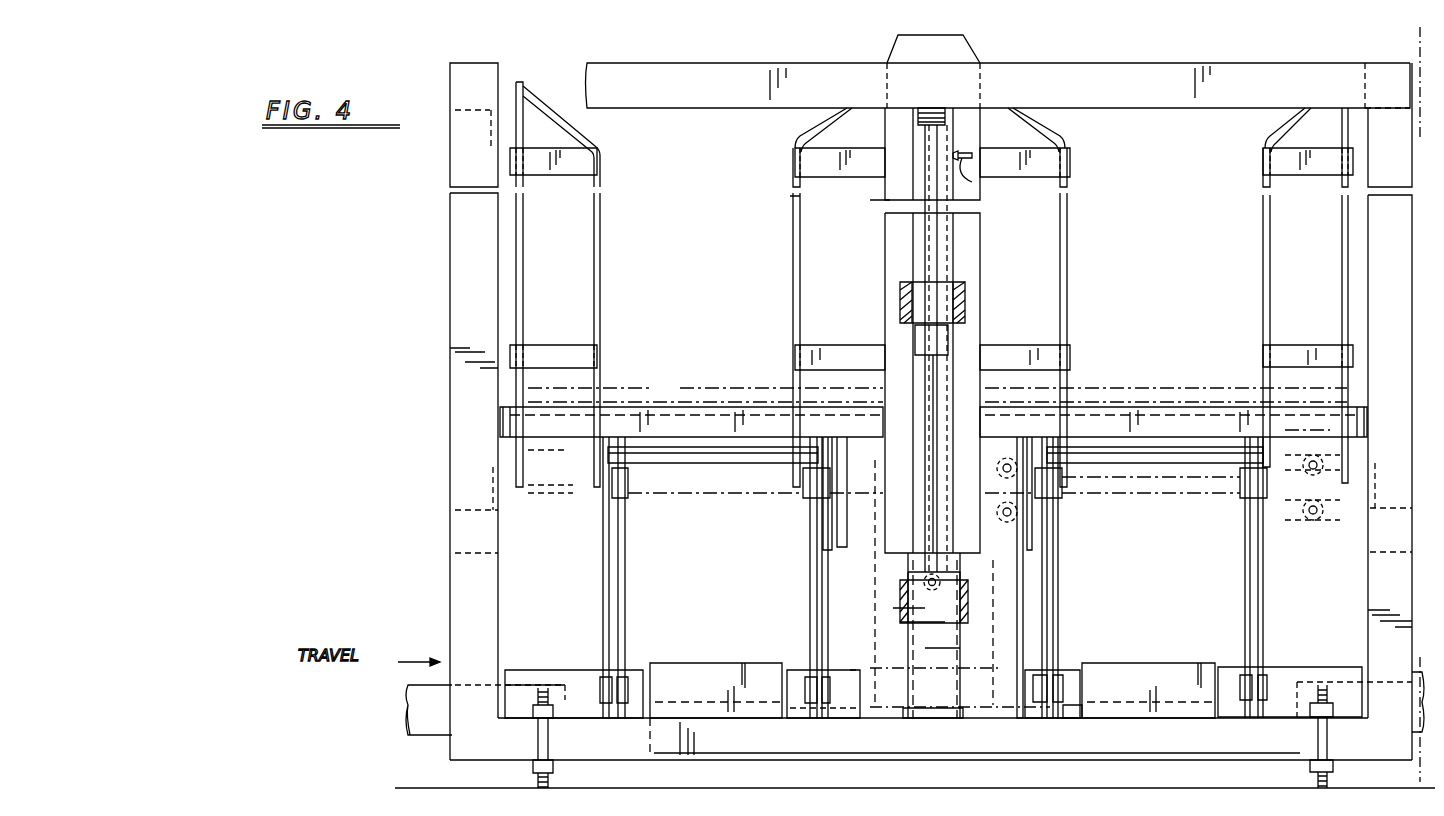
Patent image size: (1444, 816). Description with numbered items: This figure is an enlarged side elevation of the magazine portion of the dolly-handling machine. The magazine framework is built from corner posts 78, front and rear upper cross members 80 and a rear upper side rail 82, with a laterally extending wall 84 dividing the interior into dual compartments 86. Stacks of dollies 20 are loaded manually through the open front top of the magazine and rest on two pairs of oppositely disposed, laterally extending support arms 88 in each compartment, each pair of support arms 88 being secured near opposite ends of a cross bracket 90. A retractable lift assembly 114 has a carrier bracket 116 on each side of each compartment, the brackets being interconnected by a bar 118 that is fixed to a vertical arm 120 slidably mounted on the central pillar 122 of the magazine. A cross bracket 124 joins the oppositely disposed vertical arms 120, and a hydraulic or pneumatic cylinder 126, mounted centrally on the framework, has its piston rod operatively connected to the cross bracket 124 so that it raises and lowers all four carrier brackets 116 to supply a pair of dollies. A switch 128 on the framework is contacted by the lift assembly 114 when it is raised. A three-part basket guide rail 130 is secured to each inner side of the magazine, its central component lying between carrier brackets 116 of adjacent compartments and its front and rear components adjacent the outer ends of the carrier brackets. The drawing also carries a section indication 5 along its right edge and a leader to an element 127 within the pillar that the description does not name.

The section line 5- 5 is at (1396, 33).
The dollies 20 is at (555, 395).
The corner posts 78 is at (455, 462).
The upper cross members 80 is at (710, 425).
The rear upper side rail 82 is at (752, 74).
The laterally extending wall 84 is at (985, 248).
The dual compartments 86 is at (602, 231).
The support arms 88 is at (625, 498).
The cross bracket 90 is at (710, 450).
The retractable lift assembly 114 is at (672, 640).
The carrier bracket 116 is at (712, 663).
The bar 118 is at (1067, 708).
The vertical arm 120 is at (962, 338).
The central pillar 122 is at (955, 140).
The cross bracket 124 is at (902, 300).
The hydraulic or pneumatic cylinder 126 is at (928, 259).
The inner rod 127 is at (925, 385).
The switch 128 is at (972, 182).
The basket guide rail 130 is at (575, 652).